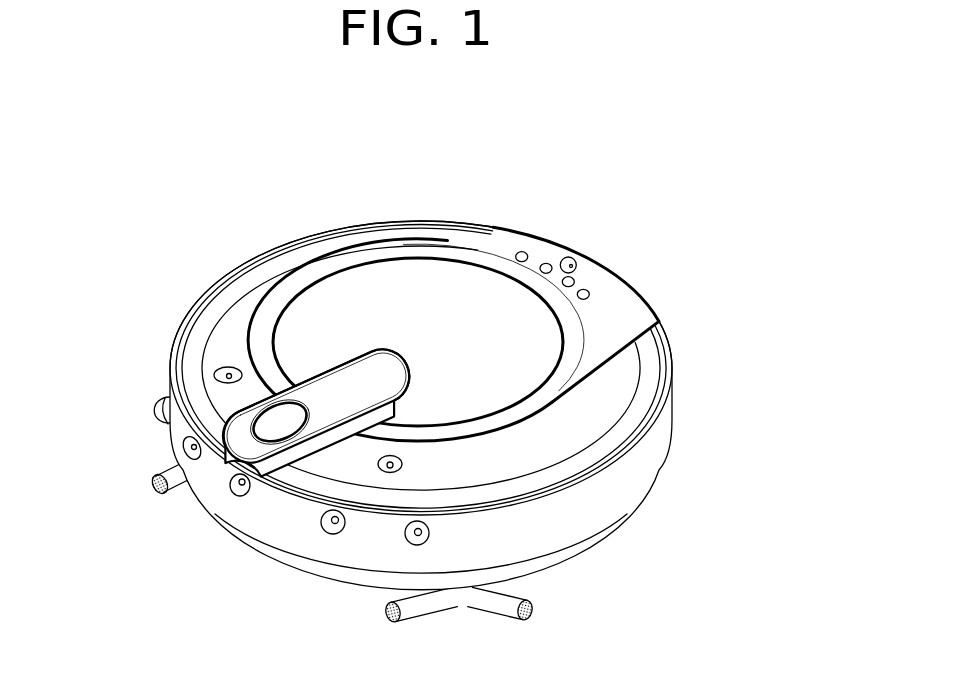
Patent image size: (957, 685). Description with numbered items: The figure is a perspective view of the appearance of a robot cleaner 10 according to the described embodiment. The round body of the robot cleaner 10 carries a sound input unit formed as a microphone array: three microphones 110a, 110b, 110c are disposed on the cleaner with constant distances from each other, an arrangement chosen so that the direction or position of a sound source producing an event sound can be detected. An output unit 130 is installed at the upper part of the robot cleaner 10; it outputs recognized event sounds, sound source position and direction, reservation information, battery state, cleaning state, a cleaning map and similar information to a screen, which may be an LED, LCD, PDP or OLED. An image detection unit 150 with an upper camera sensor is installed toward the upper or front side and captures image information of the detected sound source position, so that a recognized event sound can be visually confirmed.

The robot cleaner 10 is at (203, 254).
The microphone 110a is at (388, 466).
The microphone 110b is at (222, 374).
The microphone 110c is at (571, 266).
The output unit 130 is at (243, 403).
The image detection unit 150 is at (262, 416).